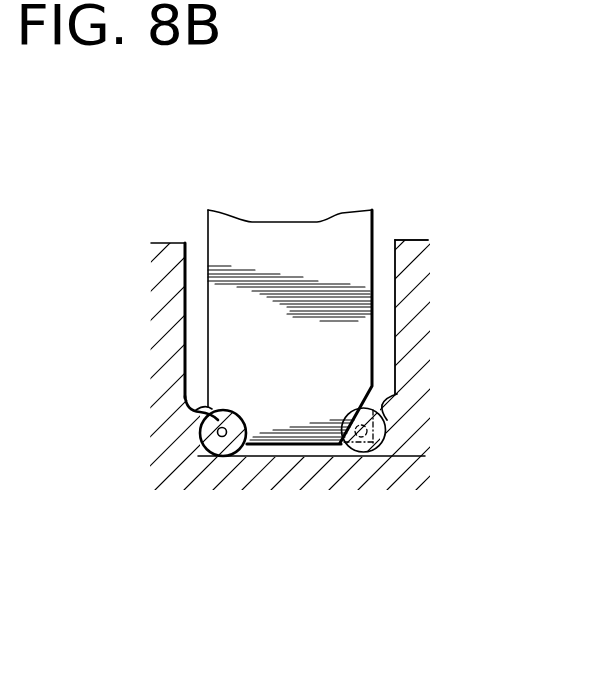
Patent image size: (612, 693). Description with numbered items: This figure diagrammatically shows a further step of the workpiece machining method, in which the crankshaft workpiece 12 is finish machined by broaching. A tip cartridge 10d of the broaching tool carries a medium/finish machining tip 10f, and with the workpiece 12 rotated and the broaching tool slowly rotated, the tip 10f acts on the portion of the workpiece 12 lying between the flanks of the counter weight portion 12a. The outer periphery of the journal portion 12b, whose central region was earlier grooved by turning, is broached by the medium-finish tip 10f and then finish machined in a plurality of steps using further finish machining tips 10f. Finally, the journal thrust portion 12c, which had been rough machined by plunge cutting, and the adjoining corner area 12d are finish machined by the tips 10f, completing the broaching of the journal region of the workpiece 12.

The tip cartridge 10d is at (266, 238).
The medium/finish machining tip 10f is at (188, 407).
The workpiece 12 is at (430, 341).
The counter weight portion 12a is at (410, 257).
The journal portion 12b is at (303, 458).
The journal thrust portion 12c is at (397, 397).
The corner area 12d is at (372, 456).